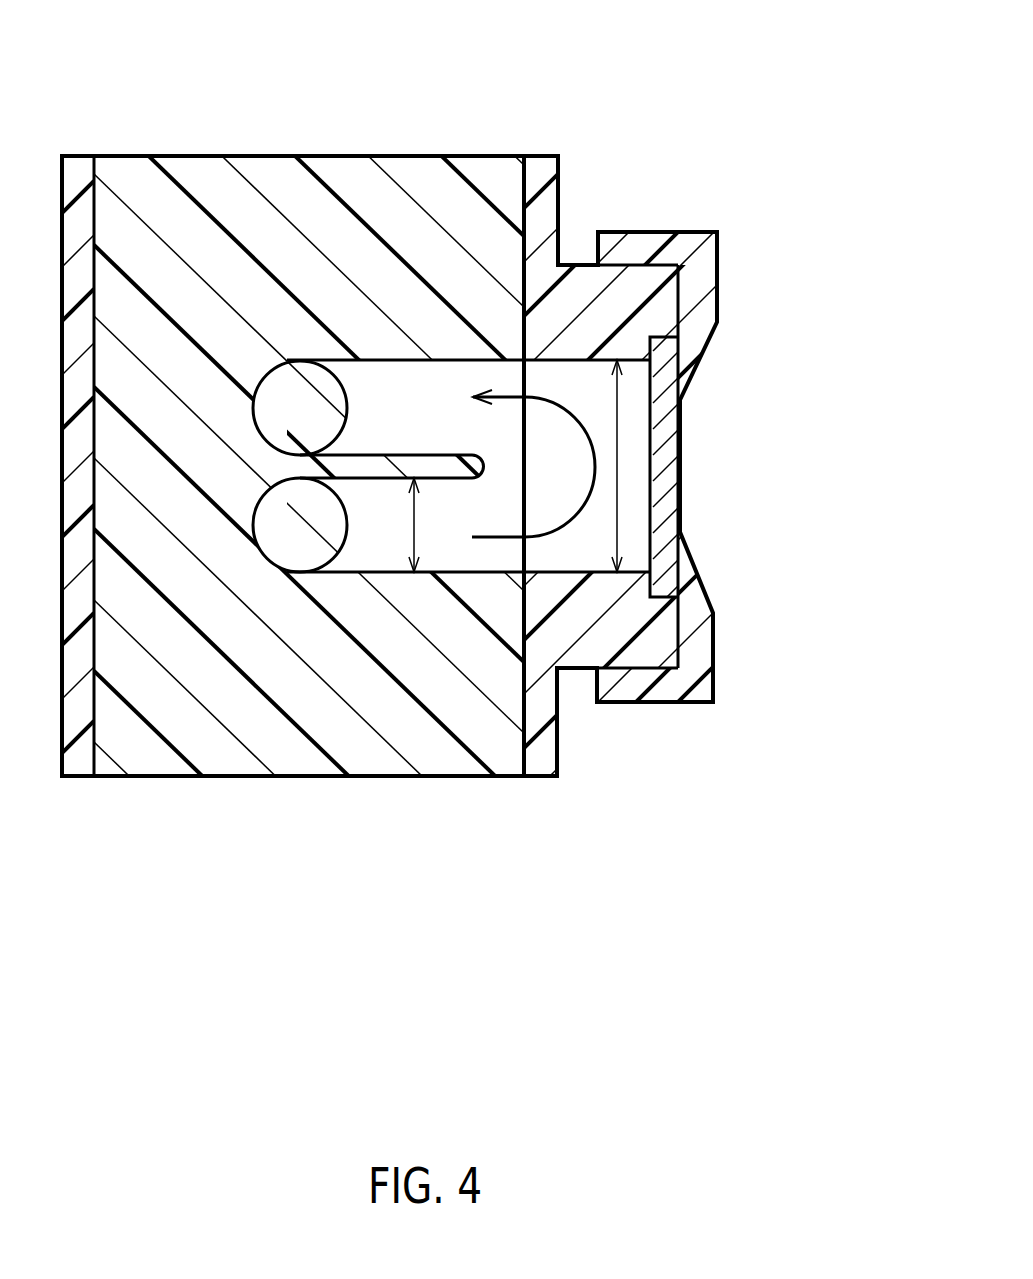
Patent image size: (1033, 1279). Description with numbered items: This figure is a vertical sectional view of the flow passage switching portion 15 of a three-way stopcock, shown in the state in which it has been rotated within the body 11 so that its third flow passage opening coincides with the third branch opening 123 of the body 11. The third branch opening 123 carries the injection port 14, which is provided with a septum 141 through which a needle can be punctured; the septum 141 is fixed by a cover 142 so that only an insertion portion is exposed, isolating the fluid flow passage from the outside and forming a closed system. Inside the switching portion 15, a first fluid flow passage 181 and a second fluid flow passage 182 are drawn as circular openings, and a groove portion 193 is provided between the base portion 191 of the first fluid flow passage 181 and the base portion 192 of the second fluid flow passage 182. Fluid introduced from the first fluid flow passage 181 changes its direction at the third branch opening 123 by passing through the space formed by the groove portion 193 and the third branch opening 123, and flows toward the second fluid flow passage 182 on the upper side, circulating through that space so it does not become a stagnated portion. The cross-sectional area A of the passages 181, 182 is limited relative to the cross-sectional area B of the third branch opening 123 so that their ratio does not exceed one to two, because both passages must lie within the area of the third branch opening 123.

The body 11 is at (72, 777).
The injection port 14 is at (868, 197).
The flow passage switching portion 15 is at (216, 777).
The third branch opening 123 is at (587, 380).
The septum 141 is at (665, 440).
The cover 142 is at (667, 252).
The first fluid flow passage 181 is at (357, 545).
The second fluid flow passage 182 is at (357, 390).
The base portion of the first fluid flow passage 191 is at (458, 535).
The base portion of the second fluid flow passage 192 is at (457, 397).
The groove portion 193 is at (503, 465).
The cross-sectional area of the first and second fluid flow passages A is at (412, 578).
The cross-sectional area of the third branch opening B is at (633, 475).